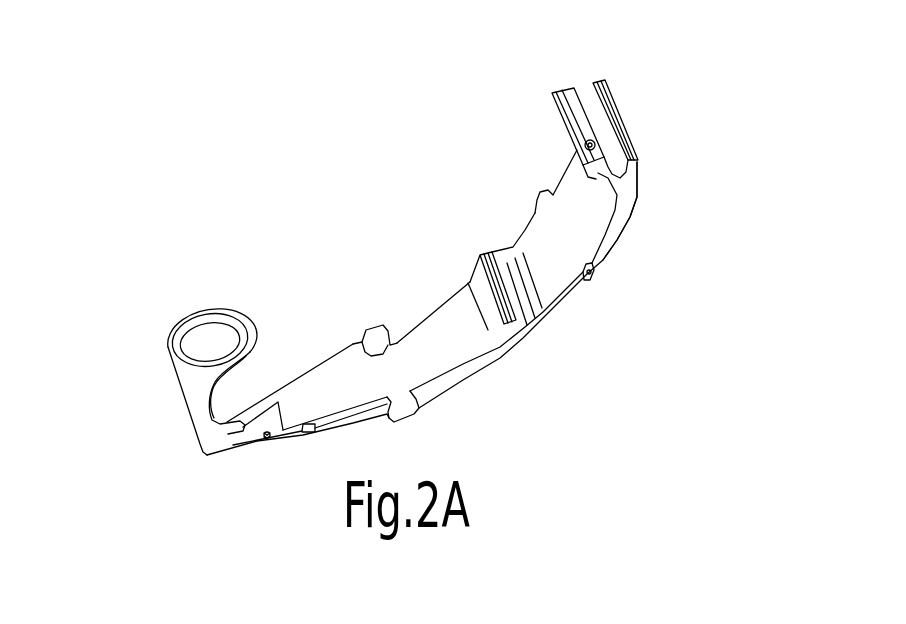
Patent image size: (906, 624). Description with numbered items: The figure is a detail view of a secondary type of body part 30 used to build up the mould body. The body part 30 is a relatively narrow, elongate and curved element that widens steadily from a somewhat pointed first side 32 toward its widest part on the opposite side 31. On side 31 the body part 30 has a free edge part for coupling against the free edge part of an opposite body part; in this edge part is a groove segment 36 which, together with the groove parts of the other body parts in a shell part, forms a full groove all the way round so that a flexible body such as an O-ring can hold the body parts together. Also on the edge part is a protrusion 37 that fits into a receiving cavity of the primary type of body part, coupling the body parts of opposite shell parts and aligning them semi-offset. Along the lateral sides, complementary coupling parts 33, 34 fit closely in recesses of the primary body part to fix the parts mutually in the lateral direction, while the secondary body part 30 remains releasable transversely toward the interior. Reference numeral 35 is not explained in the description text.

The secondary type of body part 30 is at (303, 165).
The side 31 is at (638, 191).
The first side 32 is at (203, 453).
The coupling part 33 is at (417, 408).
The coupling part 34 is at (588, 284).
The eyelet 35 is at (175, 344).
The groove segment 36 is at (609, 104).
The protrusion 37 is at (631, 140).